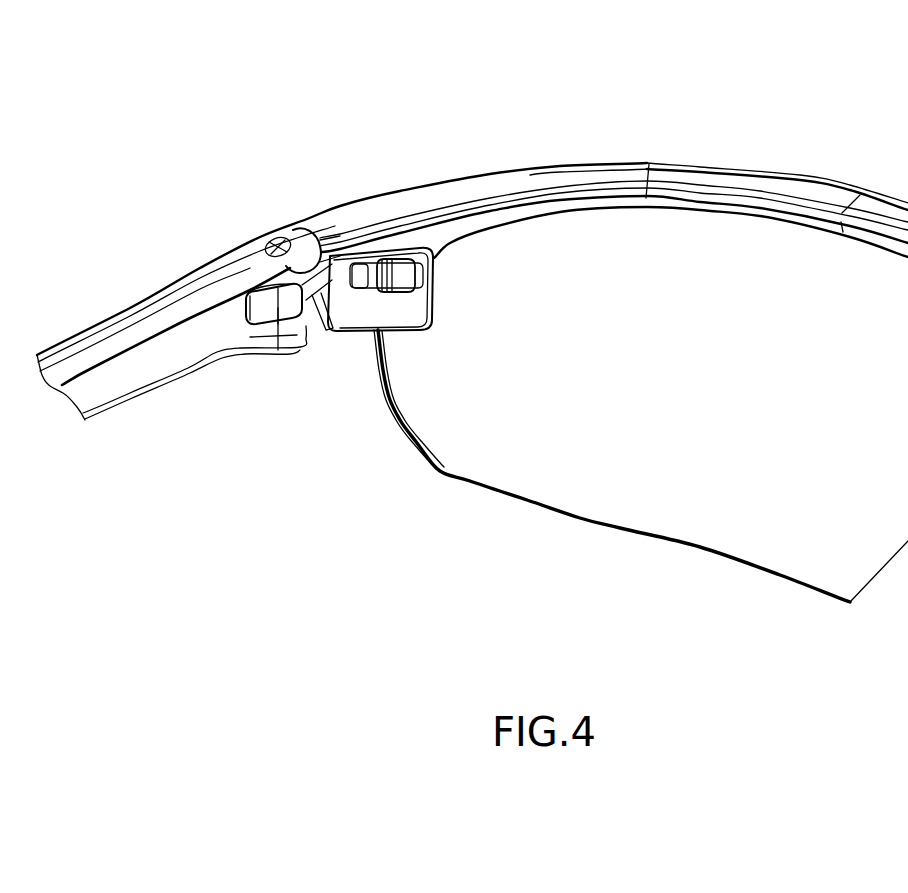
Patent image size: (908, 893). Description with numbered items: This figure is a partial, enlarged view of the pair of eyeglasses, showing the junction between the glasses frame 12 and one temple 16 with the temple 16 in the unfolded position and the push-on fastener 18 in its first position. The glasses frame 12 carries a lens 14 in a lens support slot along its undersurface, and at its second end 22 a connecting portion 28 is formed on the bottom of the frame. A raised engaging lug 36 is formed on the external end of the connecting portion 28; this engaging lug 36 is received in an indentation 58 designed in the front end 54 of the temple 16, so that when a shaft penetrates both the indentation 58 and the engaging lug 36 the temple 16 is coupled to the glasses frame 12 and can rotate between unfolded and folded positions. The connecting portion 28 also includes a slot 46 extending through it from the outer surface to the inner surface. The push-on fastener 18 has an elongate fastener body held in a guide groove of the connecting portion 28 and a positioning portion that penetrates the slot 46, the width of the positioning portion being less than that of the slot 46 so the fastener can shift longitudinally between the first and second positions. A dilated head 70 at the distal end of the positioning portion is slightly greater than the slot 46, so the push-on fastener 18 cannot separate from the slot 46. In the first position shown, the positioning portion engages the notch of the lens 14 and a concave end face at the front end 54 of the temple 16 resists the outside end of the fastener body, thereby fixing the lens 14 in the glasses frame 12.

The glasses frame 12 is at (728, 188).
The lens 14 is at (467, 457).
The temple 16 is at (115, 392).
The push-on fastener 18 is at (397, 283).
The second end 22 is at (345, 223).
The connecting portion 28 is at (407, 330).
The engaging lug 36 is at (280, 305).
The slot 46 is at (367, 285).
The front end 54 is at (215, 277).
The indentation 58 is at (250, 322).
The dilated head 70 is at (430, 250).